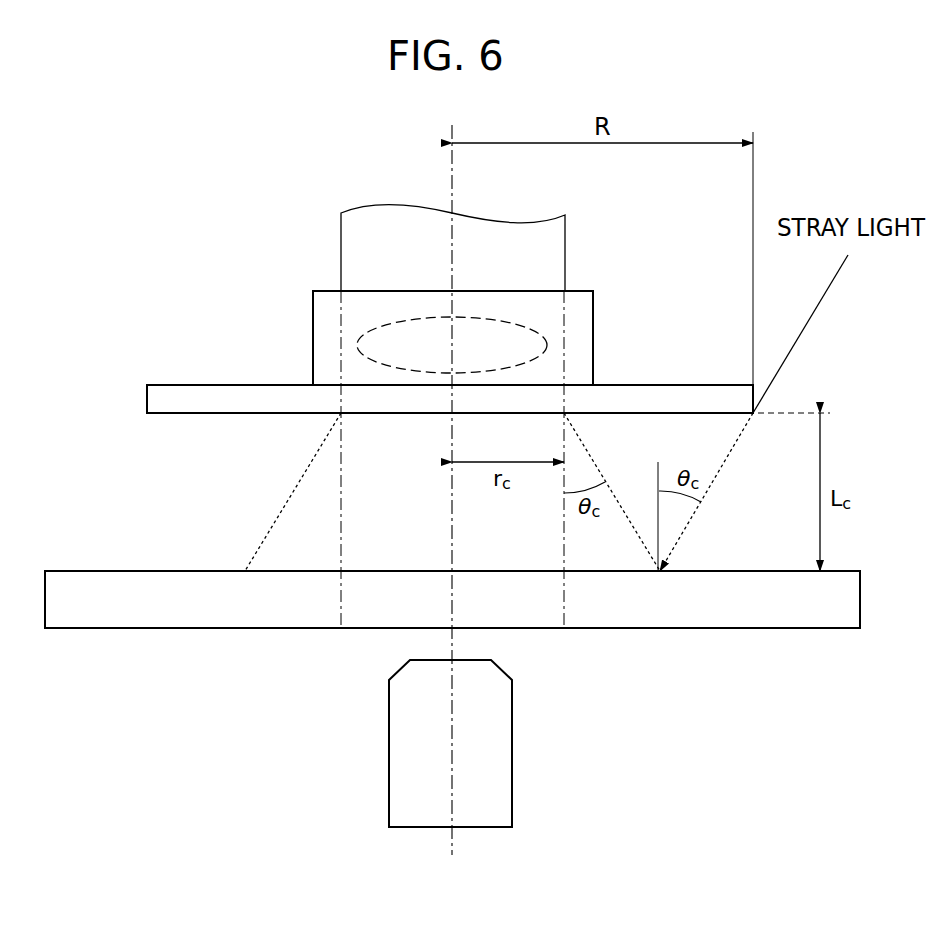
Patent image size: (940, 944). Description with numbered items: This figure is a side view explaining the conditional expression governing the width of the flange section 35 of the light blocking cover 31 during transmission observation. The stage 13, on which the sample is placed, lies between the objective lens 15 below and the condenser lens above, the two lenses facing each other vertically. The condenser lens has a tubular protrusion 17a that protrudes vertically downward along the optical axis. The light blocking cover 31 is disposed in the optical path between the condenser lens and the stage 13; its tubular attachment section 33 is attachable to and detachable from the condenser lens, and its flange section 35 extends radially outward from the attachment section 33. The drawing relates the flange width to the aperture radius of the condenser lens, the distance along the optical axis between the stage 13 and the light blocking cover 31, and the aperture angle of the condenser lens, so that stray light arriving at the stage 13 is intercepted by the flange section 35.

The stage 13 is at (115, 571).
The objective lens 15 is at (389, 745).
The tubular protrusion 17a is at (341, 243).
The light blocking cover 31 is at (160, 246).
The tubular attachment section 33 is at (313, 313).
The flange section 35 is at (167, 385).